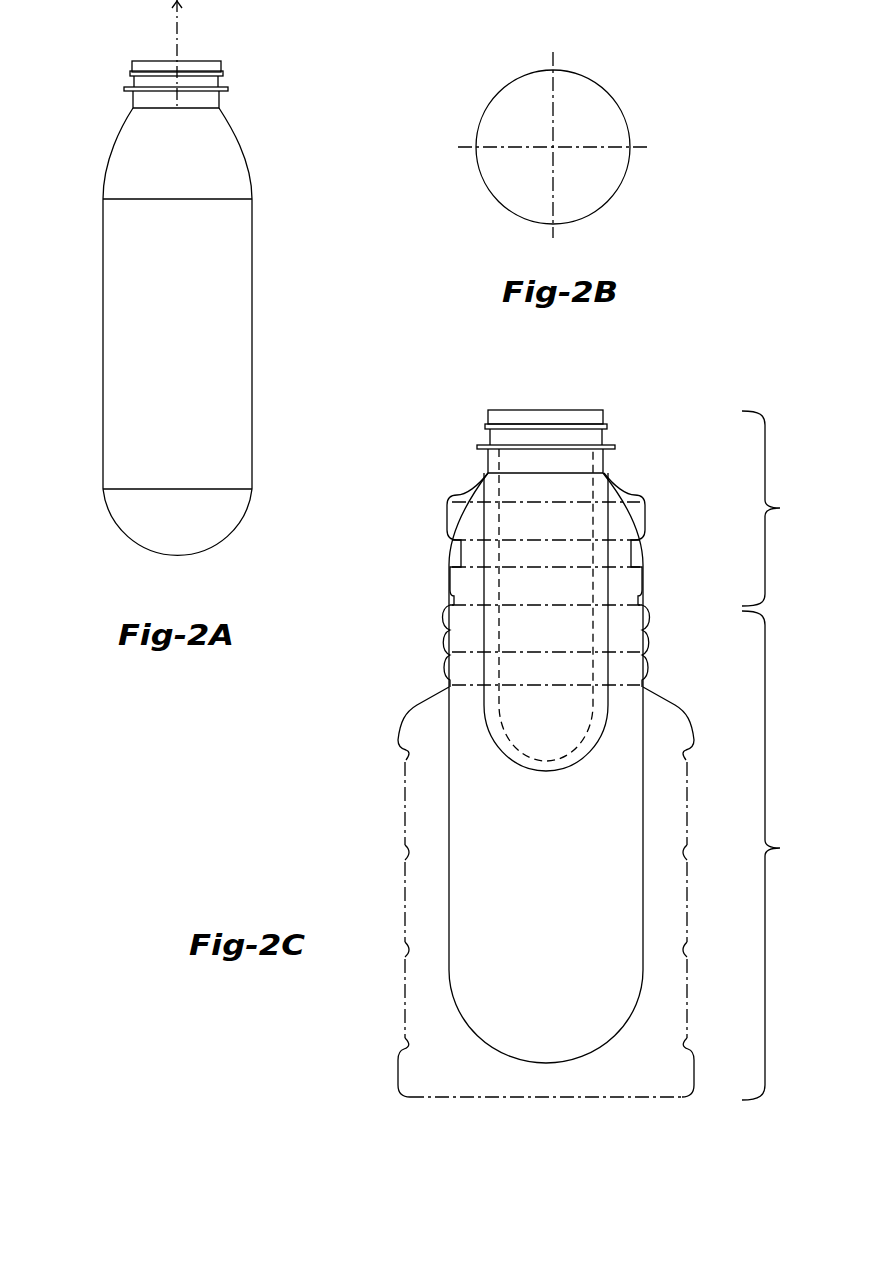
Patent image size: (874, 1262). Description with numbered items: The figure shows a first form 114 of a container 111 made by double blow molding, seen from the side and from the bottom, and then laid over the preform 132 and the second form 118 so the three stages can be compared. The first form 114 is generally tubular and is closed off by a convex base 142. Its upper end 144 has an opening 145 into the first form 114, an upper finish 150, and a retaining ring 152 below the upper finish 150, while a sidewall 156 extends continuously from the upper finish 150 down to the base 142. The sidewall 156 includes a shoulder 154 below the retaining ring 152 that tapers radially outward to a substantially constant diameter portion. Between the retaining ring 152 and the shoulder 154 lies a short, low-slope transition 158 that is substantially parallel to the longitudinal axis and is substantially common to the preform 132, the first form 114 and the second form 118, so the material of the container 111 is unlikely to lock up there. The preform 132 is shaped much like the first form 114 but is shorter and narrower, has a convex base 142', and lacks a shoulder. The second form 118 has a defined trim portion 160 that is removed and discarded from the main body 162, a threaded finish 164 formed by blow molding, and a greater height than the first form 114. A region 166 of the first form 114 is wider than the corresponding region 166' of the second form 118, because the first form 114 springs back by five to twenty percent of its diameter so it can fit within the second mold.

In FIG. 2C, the container 111 is at (548, 518).
In FIG. 2A, the first form 114 is at (173, 277).
In FIG. 2B, the first form 114 is at (569, 135).
In FIG. 2C, the first form 114 is at (593, 768).
In FIG. 2C, the second form 118 is at (415, 703).
In FIG. 2C, the preform 132 is at (575, 641).
In FIG. 2A, the base 142 is at (199, 522).
In FIG. 2B, the base 142 is at (578, 147).
In FIG. 2C, the base 142 is at (556, 1016).
In FIG. 2C, the base of the preform 142' is at (555, 803).
In FIG. 2A, the upper end 144 is at (179, 64).
In FIG. 2A, the opening 145 is at (167, 60).
In FIG. 2C, the opening 145 is at (535, 406).
In FIG. 2A, the upper finish 150 is at (223, 73).
In FIG. 2C, the upper finish 150 is at (609, 427).
In FIG. 2A, the retaining ring 152 is at (228, 89).
In FIG. 2C, the retaining ring 152 is at (615, 448).
In FIG. 2A, the shoulder 154 is at (112, 143).
In FIG. 2C, the shoulder 154 is at (473, 492).
In FIG. 2A, the sidewall 156 is at (247, 267).
In FIG. 2A, the transition 158 is at (130, 97).
In FIG. 2C, the transition 158 is at (486, 462).
In FIG. 2C, the trim portion 160 is at (779, 508).
In FIG. 2C, the main body 162 is at (779, 855).
In FIG. 2C, the threaded finish 164 is at (442, 636).
In FIG. 2C, the region of the first form 166 is at (678, 669).
In FIG. 2C, the region of the second form 166' is at (559, 605).